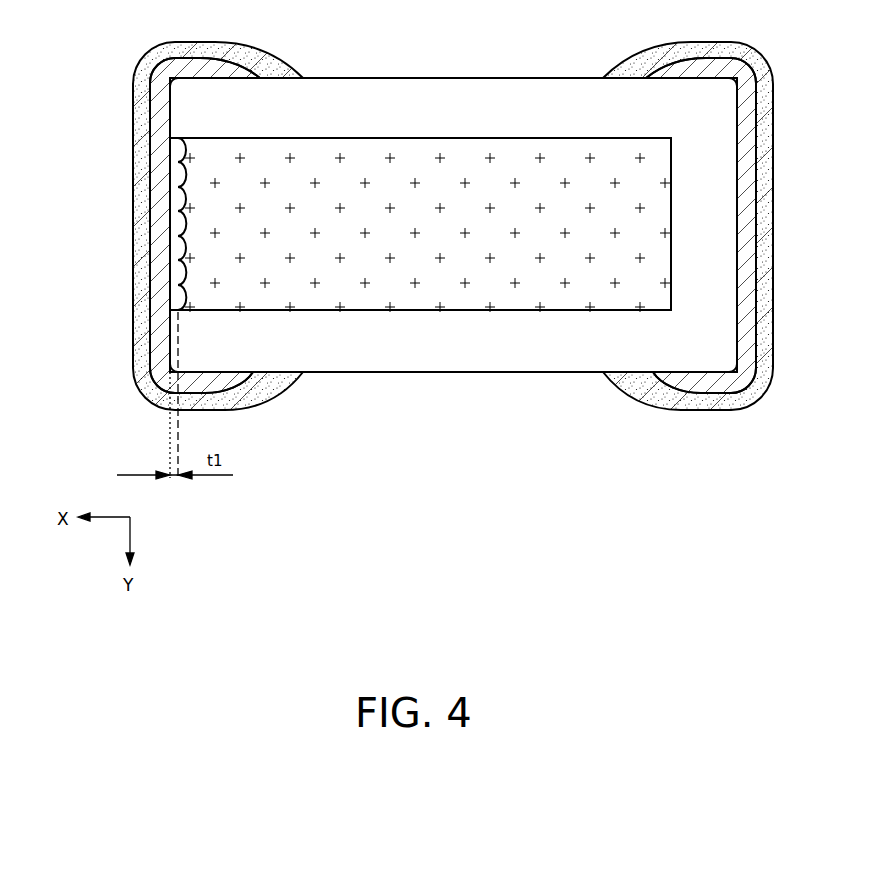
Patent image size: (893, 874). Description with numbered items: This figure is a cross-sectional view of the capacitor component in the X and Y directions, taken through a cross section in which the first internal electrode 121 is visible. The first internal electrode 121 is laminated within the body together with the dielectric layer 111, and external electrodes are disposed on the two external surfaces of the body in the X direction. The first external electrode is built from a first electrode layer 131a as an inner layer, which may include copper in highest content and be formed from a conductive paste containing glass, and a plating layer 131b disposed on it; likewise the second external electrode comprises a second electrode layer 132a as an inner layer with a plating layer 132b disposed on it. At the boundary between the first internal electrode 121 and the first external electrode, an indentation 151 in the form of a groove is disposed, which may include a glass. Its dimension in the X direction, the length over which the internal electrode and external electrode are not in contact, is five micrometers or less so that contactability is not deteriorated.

The dielectric layer 111 is at (528, 352).
The first internal electrode 121 is at (425, 163).
The indentation 151 is at (173, 148).
The first electrode layer 131a is at (158, 348).
The plating layer 131b is at (140, 223).
The second electrode layer 132a is at (690, 380).
The plating layer 132b is at (628, 408).